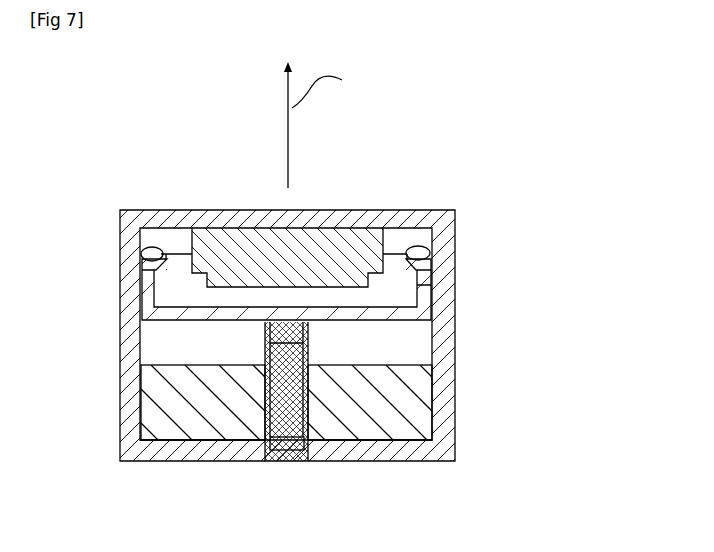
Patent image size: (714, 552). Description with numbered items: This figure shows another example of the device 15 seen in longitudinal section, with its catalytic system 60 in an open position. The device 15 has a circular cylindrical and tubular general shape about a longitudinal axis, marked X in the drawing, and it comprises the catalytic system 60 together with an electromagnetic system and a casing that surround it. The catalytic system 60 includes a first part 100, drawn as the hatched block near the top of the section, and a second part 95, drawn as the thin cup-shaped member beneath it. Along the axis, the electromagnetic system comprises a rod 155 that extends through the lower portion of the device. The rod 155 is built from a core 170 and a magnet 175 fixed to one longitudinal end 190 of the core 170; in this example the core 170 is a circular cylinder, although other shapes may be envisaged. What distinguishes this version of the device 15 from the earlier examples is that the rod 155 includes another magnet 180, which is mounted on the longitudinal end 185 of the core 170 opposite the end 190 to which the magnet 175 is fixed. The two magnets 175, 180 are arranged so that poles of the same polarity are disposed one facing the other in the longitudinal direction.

The device 15 is at (168, 165).
The catalytic system 60 is at (445, 290).
The second part 95 is at (431, 320).
The first part 100 is at (340, 232).
The rod 155 is at (265, 440).
The core 170 is at (325, 418).
The magnet 175 is at (305, 332).
The other magnet 180 is at (308, 455).
The longitudinal end 185 is at (275, 450).
The longitudinal end 190 is at (268, 337).